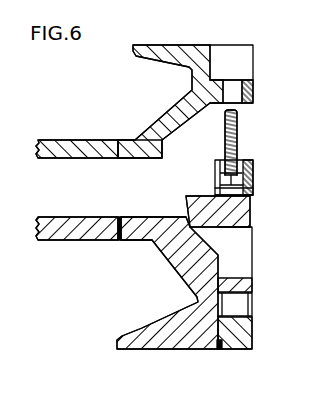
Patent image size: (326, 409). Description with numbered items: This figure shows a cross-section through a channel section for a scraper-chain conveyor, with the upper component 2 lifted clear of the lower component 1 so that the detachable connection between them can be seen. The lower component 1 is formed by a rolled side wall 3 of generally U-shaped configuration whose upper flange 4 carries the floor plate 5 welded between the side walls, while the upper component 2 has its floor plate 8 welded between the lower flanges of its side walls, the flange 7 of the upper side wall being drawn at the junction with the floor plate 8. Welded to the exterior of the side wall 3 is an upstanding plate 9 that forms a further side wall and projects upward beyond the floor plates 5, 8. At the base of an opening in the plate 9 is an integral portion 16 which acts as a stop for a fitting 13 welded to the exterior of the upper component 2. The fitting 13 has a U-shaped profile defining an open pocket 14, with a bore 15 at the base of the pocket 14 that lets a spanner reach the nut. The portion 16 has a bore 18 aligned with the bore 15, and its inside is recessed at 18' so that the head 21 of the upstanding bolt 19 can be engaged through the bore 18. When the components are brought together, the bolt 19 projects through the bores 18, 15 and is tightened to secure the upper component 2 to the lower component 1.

The lower component 1 is at (108, 302).
The upper component 2 is at (100, 120).
The side wall 3 is at (178, 336).
The upper flange 4 is at (153, 232).
The floor plate 5 is at (70, 238).
The flange arm 7 is at (141, 158).
The floor plate 8 is at (54, 152).
The upstanding plate 9 is at (253, 286).
The fitting 13 is at (256, 90).
The pocket 14 is at (240, 56).
The bore 15 is at (238, 88).
The integral portion 16 is at (255, 171).
The bore 18 is at (211, 183).
The recess 18' is at (203, 185).
The bolt 19 is at (240, 136).
The bolt head 21 is at (253, 188).